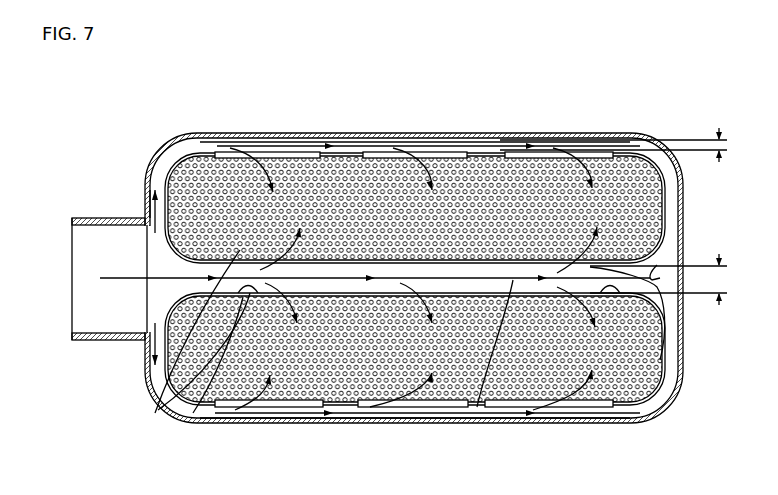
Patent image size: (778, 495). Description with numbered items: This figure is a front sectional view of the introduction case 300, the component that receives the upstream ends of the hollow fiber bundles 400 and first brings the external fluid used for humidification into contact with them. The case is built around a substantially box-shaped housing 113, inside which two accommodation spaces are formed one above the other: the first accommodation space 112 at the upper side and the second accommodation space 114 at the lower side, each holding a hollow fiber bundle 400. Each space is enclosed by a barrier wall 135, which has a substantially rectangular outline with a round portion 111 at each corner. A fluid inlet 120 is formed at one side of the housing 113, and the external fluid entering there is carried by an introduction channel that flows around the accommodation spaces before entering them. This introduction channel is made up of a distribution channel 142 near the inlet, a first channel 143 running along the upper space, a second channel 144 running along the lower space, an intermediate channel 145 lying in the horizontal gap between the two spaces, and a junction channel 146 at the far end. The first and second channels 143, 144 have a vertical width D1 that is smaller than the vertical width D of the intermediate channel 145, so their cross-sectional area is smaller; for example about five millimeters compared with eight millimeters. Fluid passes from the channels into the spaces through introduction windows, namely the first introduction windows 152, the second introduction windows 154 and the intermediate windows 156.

The muffler 300 is at (166, 132).
The housing 113 is at (226, 137).
The first accommodation space 112 is at (183, 186).
The second accommodation space 114 is at (193, 422).
The fluid inlet 120 is at (85, 298).
The round portion 111 is at (153, 255).
The distribution channel 142 is at (174, 270).
The first channel 143 is at (352, 148).
The second channel 144 is at (343, 413).
The intermediate channel 145 is at (370, 283).
The junction channel 146 is at (657, 265).
The first introduction windows 152 is at (296, 157).
The second introduction windows 154 is at (283, 406).
The intermediate windows 156 is at (217, 378).
The barrier wall 135 is at (467, 283).
The hollow fiber bundle 400 is at (500, 190).
The vertical width of first and second channels D1 is at (613, 138).
The vertical width of intermediate channel D is at (658, 279).